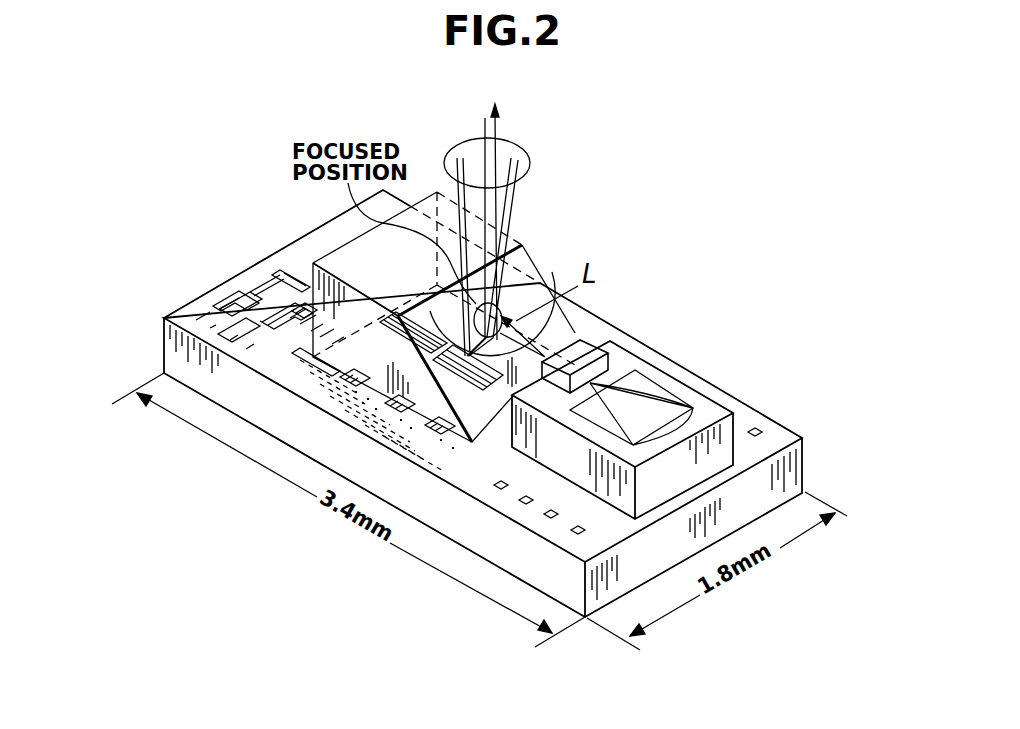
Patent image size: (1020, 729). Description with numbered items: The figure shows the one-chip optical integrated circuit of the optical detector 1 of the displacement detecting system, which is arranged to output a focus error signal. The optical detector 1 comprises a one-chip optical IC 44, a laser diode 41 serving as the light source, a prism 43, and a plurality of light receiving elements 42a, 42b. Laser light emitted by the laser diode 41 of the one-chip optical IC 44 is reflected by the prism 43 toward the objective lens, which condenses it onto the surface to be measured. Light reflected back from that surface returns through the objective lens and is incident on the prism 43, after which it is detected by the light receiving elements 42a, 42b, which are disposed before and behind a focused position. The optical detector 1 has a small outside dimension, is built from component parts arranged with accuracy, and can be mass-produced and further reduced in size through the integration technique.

The optical detector 1 is at (620, 230).
The laser diode 41 is at (590, 343).
The light receiving element 42a is at (462, 348).
The light receiving element 42b is at (388, 335).
The prism 43 is at (524, 283).
The one-chip optical integrated circuit 44 is at (733, 410).